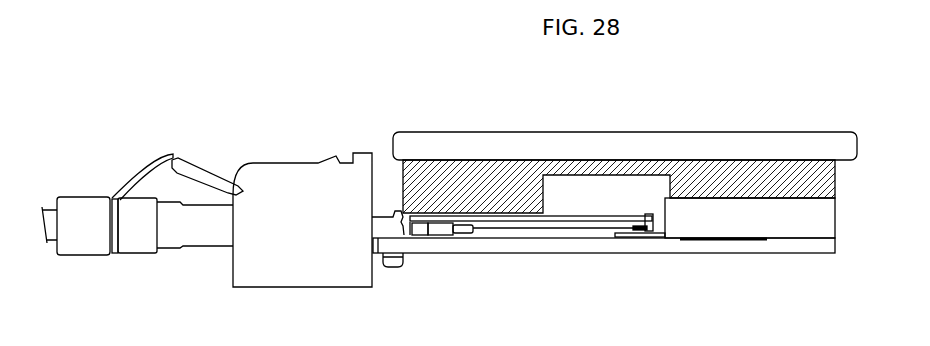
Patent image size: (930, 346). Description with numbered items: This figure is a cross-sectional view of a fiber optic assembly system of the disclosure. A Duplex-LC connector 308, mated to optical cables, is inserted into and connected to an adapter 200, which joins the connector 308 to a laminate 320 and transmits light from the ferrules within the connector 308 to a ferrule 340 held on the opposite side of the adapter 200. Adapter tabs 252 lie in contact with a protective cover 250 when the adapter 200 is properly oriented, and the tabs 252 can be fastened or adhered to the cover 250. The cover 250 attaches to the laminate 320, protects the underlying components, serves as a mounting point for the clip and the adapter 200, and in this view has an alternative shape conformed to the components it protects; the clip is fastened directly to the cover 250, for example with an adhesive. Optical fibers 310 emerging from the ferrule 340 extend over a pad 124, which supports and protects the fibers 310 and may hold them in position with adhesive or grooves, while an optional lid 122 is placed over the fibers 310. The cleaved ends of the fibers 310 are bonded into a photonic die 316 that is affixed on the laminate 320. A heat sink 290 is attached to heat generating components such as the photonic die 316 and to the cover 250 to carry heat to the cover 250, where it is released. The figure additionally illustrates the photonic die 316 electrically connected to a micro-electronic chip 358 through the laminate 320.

The Duplex-LC connector 308 is at (128, 212).
The adapter 200 is at (319, 231).
The adapter tabs 252 is at (384, 216).
The heat sink 290 is at (697, 142).
The cover 250 is at (503, 170).
The micro-electronic chip 358 is at (803, 208).
The laminate 320 is at (748, 246).
The optical fibers 310 is at (528, 230).
The ferrule 340 is at (442, 236).
The pad 124 is at (648, 215).
The lid 122 is at (647, 233).
The photonic die 316 is at (622, 238).